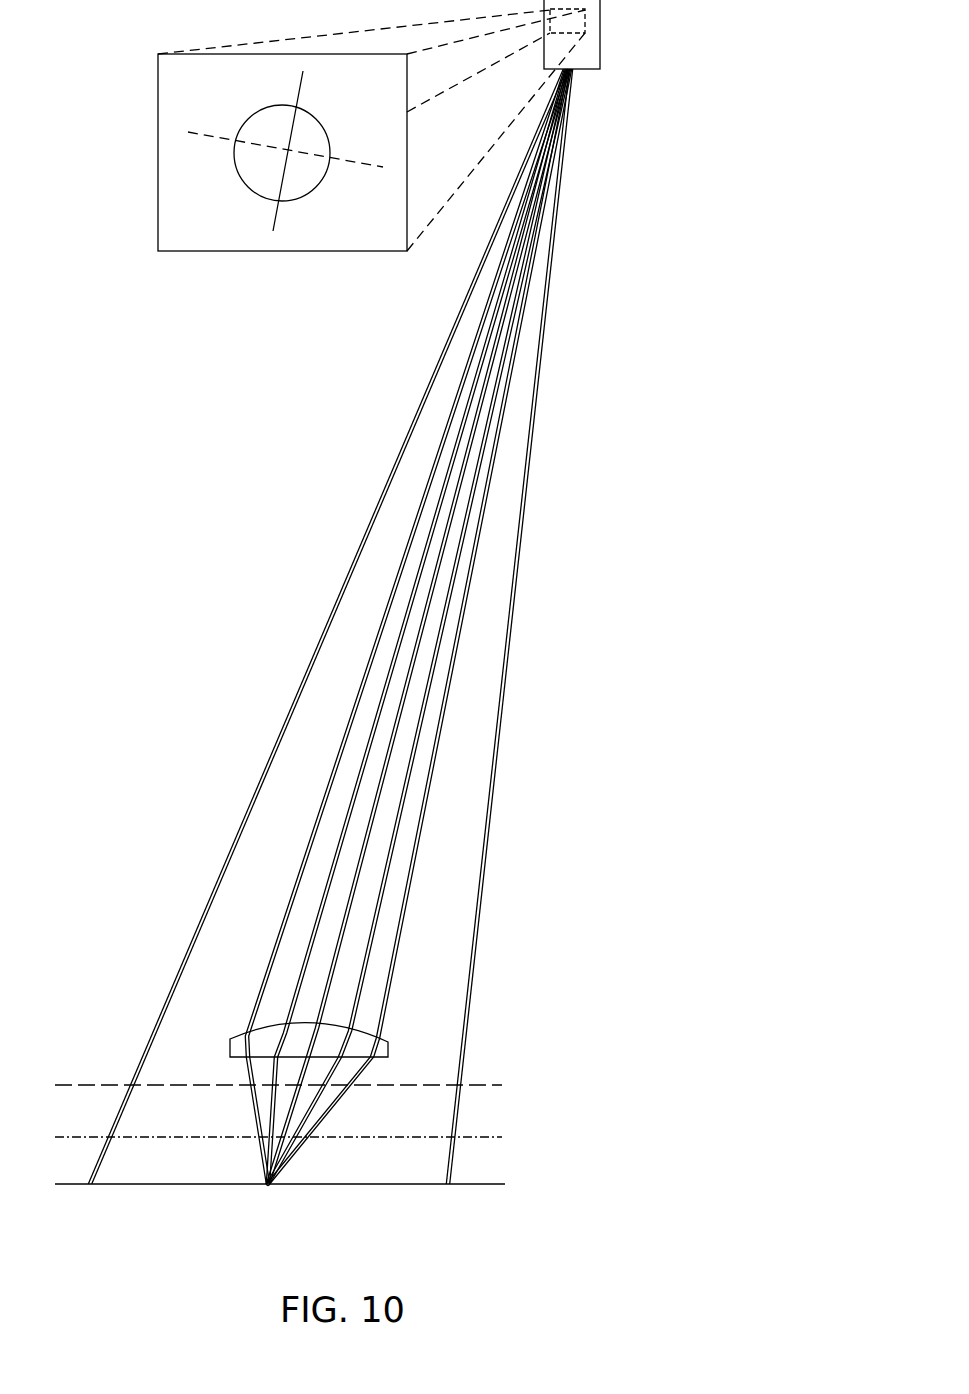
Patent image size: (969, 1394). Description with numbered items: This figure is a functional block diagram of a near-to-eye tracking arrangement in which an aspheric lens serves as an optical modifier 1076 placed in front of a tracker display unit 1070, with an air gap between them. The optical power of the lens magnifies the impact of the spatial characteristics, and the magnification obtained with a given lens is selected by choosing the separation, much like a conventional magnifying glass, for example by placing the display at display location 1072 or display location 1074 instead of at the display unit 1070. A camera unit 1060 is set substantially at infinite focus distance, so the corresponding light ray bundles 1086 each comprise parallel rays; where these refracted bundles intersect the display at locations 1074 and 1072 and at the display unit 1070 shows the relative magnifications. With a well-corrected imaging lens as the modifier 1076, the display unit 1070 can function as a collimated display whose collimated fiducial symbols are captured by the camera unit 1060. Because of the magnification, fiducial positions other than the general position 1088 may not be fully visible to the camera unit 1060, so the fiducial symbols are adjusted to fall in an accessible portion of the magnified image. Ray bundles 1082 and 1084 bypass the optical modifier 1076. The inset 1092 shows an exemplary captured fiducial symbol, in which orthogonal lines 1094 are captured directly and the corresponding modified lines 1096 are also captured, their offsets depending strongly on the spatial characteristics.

The camera unit 1060 is at (600, 28).
The inset 1092 is at (158, 103).
The orthogonal lines 1094 is at (342, 158).
The modified lines 1096 is at (264, 167).
The ray bundle 1084 is at (289, 716).
The ray bundle 1082 is at (512, 623).
The light ray bundles 1086 is at (338, 837).
The optical modifier 1076 is at (386, 1041).
The display location 1074 is at (525, 1068).
The display location 1072 is at (525, 1121).
The tracker display unit 1070 is at (525, 1168).
The general position 1088 is at (268, 1186).